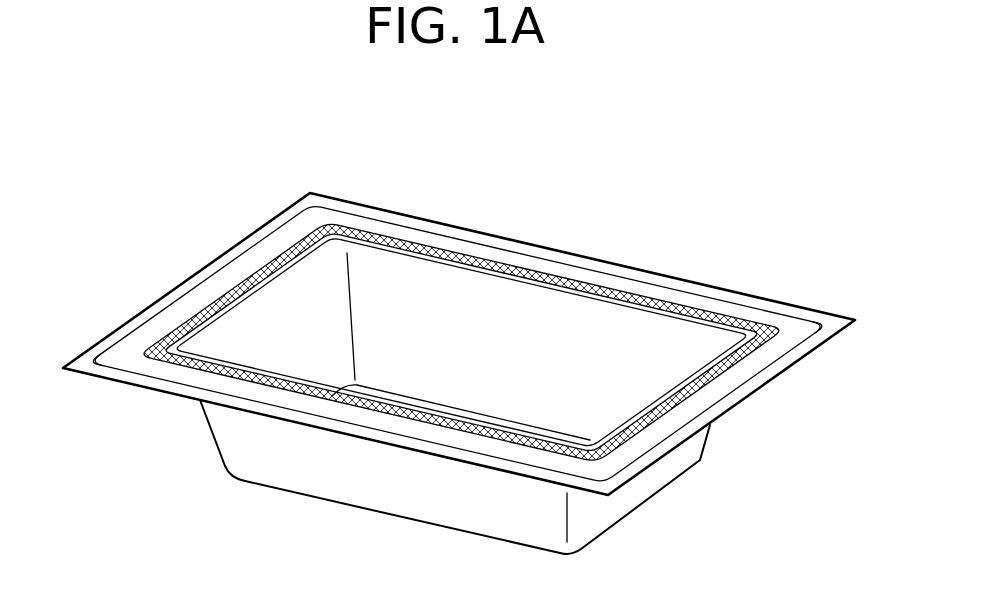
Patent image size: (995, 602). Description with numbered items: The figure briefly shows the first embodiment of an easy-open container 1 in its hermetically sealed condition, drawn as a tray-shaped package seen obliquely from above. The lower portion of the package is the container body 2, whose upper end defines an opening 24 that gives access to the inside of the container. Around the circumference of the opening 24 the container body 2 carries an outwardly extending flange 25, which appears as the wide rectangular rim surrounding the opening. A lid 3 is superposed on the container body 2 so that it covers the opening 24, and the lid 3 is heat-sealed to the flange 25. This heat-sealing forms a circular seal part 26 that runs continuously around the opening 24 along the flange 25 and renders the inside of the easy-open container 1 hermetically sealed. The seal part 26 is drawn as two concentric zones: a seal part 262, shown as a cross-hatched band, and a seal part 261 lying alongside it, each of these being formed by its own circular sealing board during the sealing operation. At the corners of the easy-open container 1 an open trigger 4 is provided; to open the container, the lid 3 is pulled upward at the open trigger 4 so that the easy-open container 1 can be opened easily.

The easy-open container 1 is at (657, 222).
The container body 2 is at (687, 458).
The lid 3 is at (840, 320).
The open trigger 4 is at (133, 358).
The opening 24 is at (488, 300).
The flange 25 is at (148, 327).
The seal part 26 is at (233, 152).
The seal part 261 is at (285, 235).
The seal part 262 is at (227, 293).